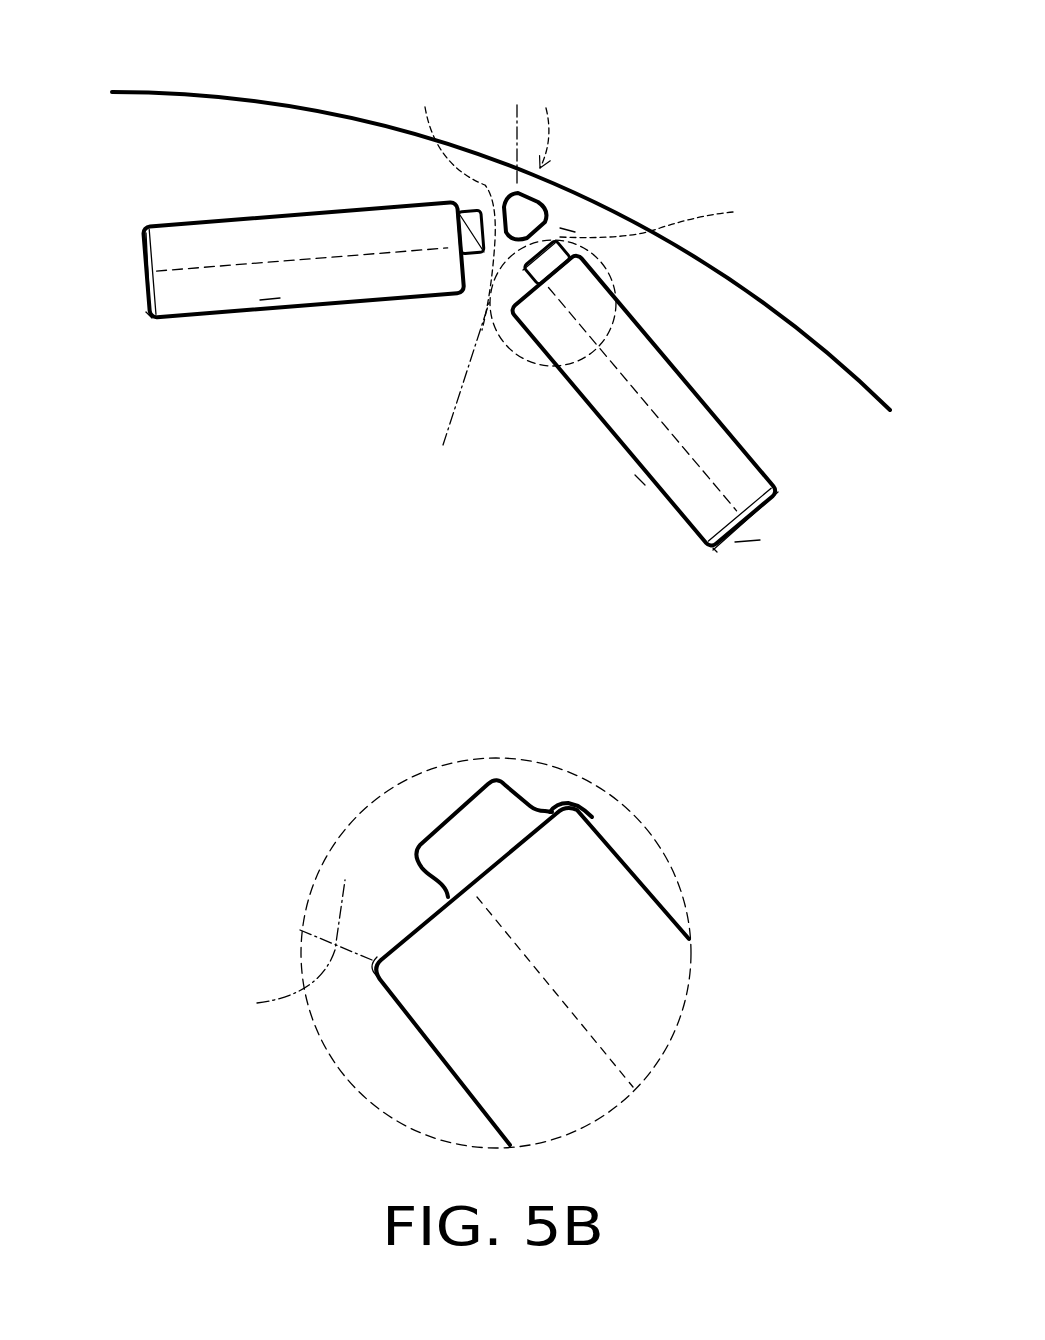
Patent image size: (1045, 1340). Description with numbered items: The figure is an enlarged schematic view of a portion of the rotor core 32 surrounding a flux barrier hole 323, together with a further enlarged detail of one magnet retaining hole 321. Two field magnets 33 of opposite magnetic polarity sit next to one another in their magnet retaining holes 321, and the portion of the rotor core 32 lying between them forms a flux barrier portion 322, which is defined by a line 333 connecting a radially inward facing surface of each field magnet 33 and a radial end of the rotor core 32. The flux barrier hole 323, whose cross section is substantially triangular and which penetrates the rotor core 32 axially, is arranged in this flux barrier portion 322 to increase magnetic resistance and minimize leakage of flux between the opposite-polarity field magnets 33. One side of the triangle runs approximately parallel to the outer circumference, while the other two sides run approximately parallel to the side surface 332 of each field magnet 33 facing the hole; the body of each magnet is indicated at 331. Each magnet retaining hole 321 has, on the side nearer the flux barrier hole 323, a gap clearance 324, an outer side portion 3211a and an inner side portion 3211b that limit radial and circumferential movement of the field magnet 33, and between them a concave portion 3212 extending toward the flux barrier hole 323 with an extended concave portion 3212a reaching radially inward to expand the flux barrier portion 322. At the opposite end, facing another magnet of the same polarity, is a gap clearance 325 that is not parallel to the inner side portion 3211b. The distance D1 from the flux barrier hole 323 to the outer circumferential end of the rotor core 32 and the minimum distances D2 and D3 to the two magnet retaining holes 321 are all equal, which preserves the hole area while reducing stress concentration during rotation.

The rotor core 32 is at (170, 125).
The field magnet 33 is at (217, 237).
The magnet retaining hole 321 is at (138, 242).
The flux barrier portion 322 is at (569, 227).
The flux barrier hole 323 is at (551, 211).
The gap clearance 324 is at (455, 232).
The gap clearance 325 is at (148, 322).
The magnet body 331 is at (268, 302).
The side surface of the field magnet 332 is at (138, 292).
The line 333 is at (337, 666).
The outer side portion 3211a is at (555, 798).
The inner side portion 3211b is at (423, 938).
The concave portion 3212 is at (472, 814).
The extended concave portion 3212a is at (440, 848).
The distance between the flux barrier hole and the outer circumferential end of the D1 is at (524, 121).
The shortest distance between the magnet retaining hole and the flux barrier hole D2 is at (448, 193).
The shortest distance between the magnet retaining hole and the flux barrier hole D3 is at (675, 212).